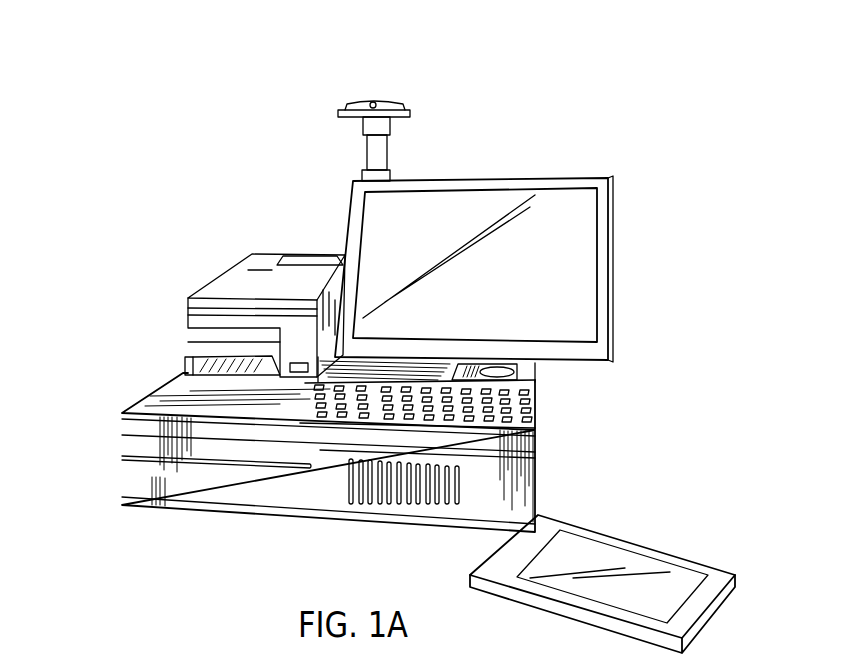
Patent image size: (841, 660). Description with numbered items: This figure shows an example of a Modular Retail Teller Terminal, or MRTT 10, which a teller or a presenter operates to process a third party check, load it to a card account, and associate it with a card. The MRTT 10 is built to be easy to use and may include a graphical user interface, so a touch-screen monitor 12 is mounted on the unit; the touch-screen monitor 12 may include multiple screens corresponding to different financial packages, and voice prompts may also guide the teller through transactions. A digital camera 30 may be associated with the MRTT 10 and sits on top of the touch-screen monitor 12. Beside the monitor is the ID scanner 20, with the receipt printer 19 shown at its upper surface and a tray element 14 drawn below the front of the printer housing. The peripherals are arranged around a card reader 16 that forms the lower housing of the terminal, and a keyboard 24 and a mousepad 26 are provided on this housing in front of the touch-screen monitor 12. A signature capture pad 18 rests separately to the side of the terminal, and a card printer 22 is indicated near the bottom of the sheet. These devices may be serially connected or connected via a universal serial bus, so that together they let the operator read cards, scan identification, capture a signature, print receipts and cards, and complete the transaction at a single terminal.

The MRTT 10 is at (607, 140).
The touch-screen monitor 12 is at (565, 286).
The paper tray 14 is at (207, 358).
The card reader 16 is at (107, 420).
The signature capture pad 18 is at (647, 550).
The receipt printer 19 is at (270, 262).
The ID scanner 20 is at (282, 222).
The card printer 22 is at (91, 657).
The keyboard 24 is at (523, 413).
The mousepad 26 is at (527, 373).
The digital camera 30 is at (348, 100).